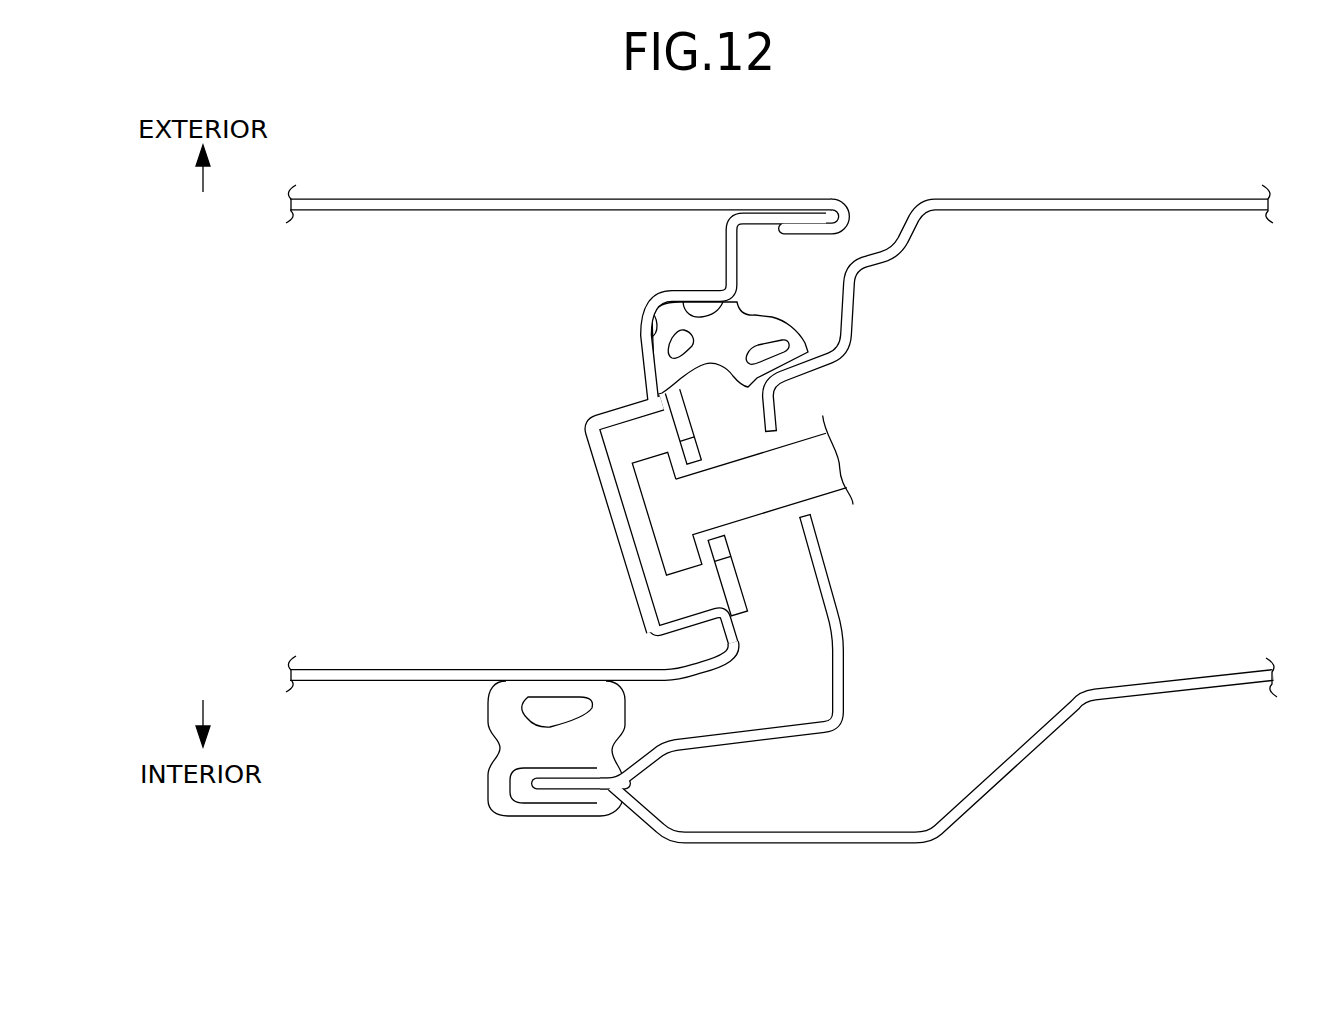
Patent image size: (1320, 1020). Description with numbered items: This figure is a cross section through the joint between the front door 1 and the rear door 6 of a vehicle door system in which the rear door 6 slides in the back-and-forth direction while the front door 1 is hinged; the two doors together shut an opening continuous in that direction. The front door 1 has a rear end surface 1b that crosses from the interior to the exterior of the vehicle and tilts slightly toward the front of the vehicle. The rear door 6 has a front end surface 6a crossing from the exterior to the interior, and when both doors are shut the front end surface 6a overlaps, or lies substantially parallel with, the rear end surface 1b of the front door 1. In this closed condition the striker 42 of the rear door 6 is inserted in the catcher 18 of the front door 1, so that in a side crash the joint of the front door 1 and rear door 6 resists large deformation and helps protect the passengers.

The front door 1 is at (522, 198).
The rear end surface 1b is at (653, 323).
The rear door 6 is at (1086, 198).
The front end surface 6a is at (816, 648).
The catcher 18 is at (746, 616).
The striker 42 is at (815, 492).